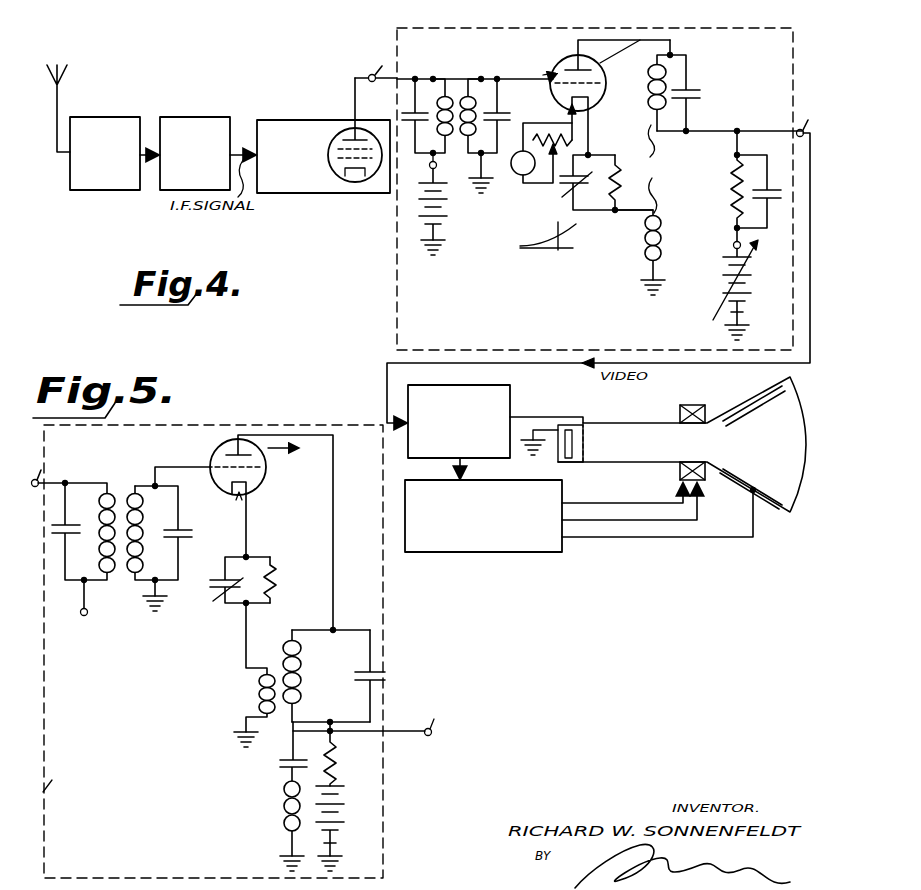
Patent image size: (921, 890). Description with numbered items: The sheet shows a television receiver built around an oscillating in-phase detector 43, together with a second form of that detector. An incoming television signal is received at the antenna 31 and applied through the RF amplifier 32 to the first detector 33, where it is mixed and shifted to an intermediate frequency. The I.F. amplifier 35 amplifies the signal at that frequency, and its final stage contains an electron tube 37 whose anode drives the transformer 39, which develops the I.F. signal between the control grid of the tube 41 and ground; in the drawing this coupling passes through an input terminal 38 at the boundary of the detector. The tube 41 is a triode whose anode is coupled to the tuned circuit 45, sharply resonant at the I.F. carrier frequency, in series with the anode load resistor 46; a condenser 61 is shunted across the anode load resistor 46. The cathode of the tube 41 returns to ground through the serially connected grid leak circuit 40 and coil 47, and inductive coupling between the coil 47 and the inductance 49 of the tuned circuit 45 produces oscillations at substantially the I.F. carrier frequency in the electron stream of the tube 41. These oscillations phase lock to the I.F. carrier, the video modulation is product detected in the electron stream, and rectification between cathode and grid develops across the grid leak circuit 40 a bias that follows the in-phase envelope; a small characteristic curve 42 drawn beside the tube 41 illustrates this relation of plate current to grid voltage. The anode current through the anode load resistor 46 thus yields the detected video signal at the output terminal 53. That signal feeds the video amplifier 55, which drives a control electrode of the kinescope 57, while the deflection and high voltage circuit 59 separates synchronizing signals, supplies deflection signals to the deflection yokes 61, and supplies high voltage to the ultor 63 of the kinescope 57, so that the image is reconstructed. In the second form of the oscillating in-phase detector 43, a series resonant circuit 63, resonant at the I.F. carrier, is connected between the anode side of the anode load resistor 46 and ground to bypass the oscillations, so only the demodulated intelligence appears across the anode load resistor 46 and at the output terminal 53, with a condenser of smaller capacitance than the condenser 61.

In FIG. 4, the antenna 31 is at (66, 70).
In FIG. 4, the RF amplifier 32 is at (122, 117).
In FIG. 4, the first detector 33 is at (216, 117).
In FIG. 4, the I.F. amplifier 35 is at (306, 193).
In FIG. 4, the electron tube 37 is at (368, 185).
In FIG. 4, the input terminal switch 38 is at (374, 64).
In FIG. 5, the input terminal switch 38 is at (43, 468).
In FIG. 4, the transformer 39 is at (468, 66).
In FIG. 5, the transformer 39 is at (122, 469).
In FIG. 4, the grid leak circuit 40 is at (572, 199).
In FIG. 5, the grid leak circuit 40 is at (239, 593).
In FIG. 4, the amplifier tube 41 is at (568, 58).
In FIG. 5, the amplifier tube 41 is at (265, 480).
In FIG. 4, the tube characteristic curve 42 is at (536, 240).
In FIG. 4, the oscillating in-phase detector 43 is at (738, 17).
In FIG. 5, the oscillating in-phase detector 43 is at (268, 424).
In FIG. 4, the tuned circuit 45 is at (692, 82).
In FIG. 5, the tuned circuit 45 is at (342, 694).
In FIG. 4, the anode load resistor 46 is at (730, 188).
In FIG. 5, the anode load resistor 46 is at (338, 768).
In FIG. 4, the coil 47 is at (664, 236).
In FIG. 5, the coil 47 is at (256, 688).
In FIG. 4, the inductance 49 is at (648, 90).
In FIG. 5, the inductance 49 is at (285, 638).
In FIG. 4, the output terminal 53 is at (702, 231).
In FIG. 5, the output terminal 53 is at (364, 716).
In FIG. 4, the video amplifier 55 is at (512, 402).
In FIG. 4, the kinescope 57 is at (797, 510).
In FIG. 4, the deflection and high voltage circuit 59 is at (535, 553).
In FIG. 4, the condenser 61 is at (772, 182).
In FIG. 4, the series resonant circuit 63 is at (760, 398).
In FIG. 5, the series resonant circuit 63 is at (270, 847).